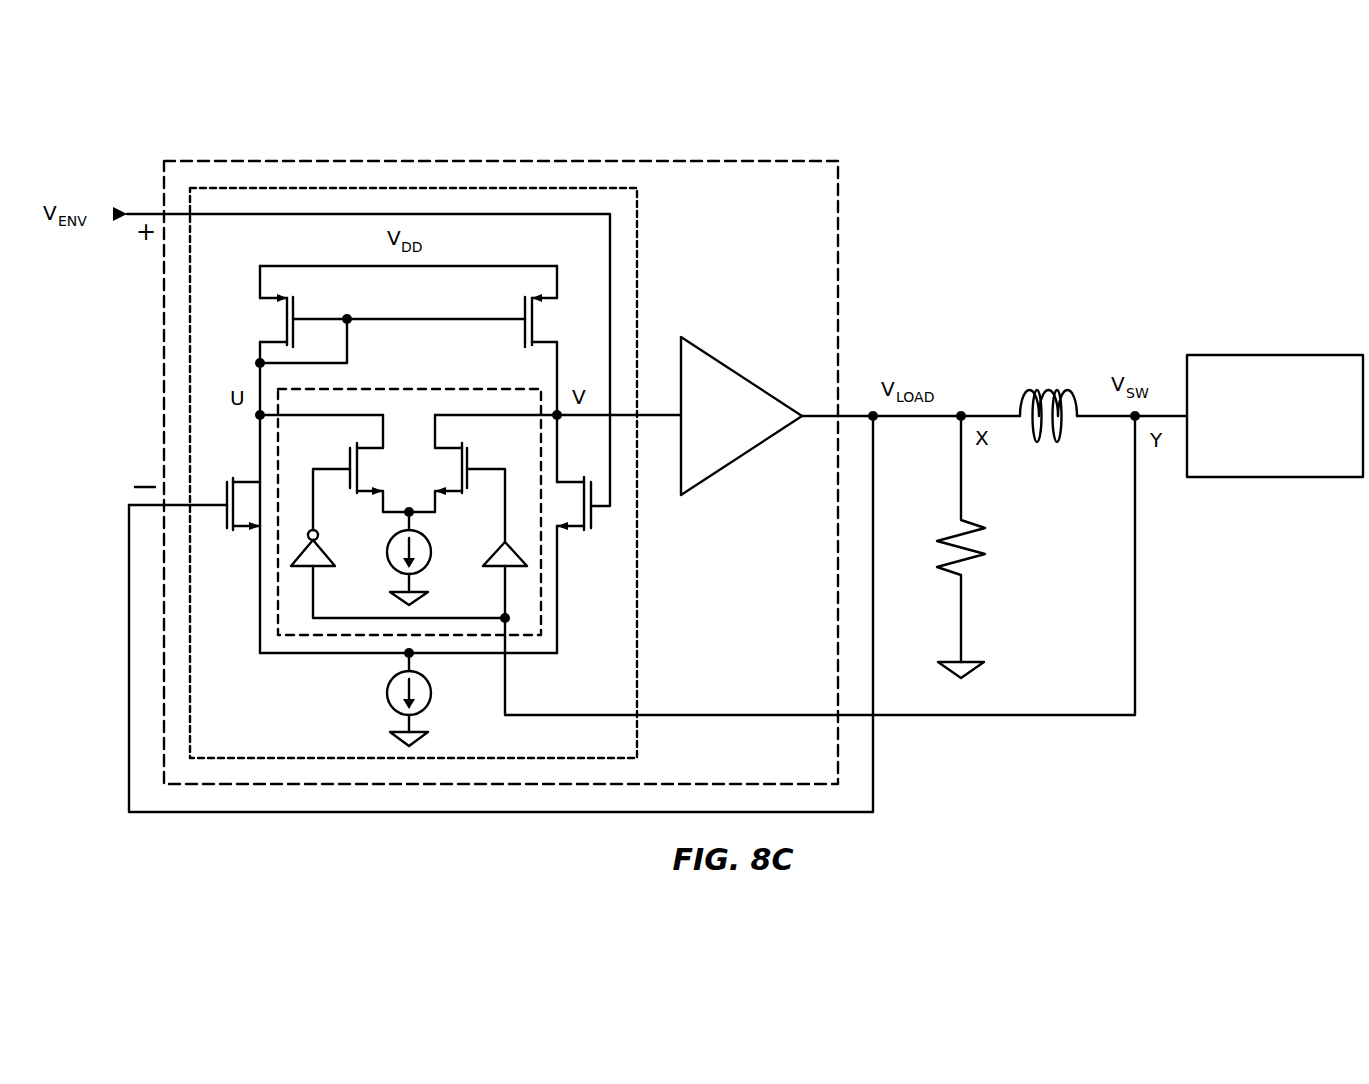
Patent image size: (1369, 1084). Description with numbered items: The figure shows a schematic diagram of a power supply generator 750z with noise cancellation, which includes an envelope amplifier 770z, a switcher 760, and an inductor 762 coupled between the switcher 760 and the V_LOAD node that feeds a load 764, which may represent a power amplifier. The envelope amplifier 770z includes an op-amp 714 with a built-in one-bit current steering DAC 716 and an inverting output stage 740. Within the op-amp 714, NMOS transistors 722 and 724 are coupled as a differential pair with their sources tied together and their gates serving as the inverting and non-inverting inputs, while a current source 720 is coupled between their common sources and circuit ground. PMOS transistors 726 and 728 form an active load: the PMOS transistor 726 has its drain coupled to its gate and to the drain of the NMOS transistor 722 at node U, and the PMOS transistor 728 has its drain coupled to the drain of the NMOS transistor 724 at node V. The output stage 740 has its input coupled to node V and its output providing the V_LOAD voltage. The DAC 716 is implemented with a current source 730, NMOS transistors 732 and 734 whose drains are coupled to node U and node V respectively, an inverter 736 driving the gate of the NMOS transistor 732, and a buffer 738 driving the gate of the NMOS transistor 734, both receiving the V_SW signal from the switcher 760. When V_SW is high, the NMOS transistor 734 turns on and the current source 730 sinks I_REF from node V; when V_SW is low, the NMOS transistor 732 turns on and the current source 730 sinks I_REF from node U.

The envelope amplifier 770z is at (498, 161).
The power supply generator 750z is at (1186, 170).
The op-amp 714 is at (270, 732).
The 1-bit current steering DAC 716 is at (419, 394).
The current source 720 is at (425, 709).
The NMOS transistor 722 is at (227, 527).
The NMOS transistor 724 is at (591, 526).
The PMOS transistor 726 is at (293, 310).
The PMOS transistor 728 is at (522, 310).
The current source 730 is at (426, 569).
The NMOS transistor 732 is at (349, 460).
The NMOS transistor 734 is at (466, 460).
The inverter 736 is at (326, 556).
The buffer 738 is at (493, 556).
The inverting output stage 740 is at (736, 367).
The switcher 760 is at (1271, 354).
The inductor 762 is at (1046, 386).
The load 764 is at (977, 524).